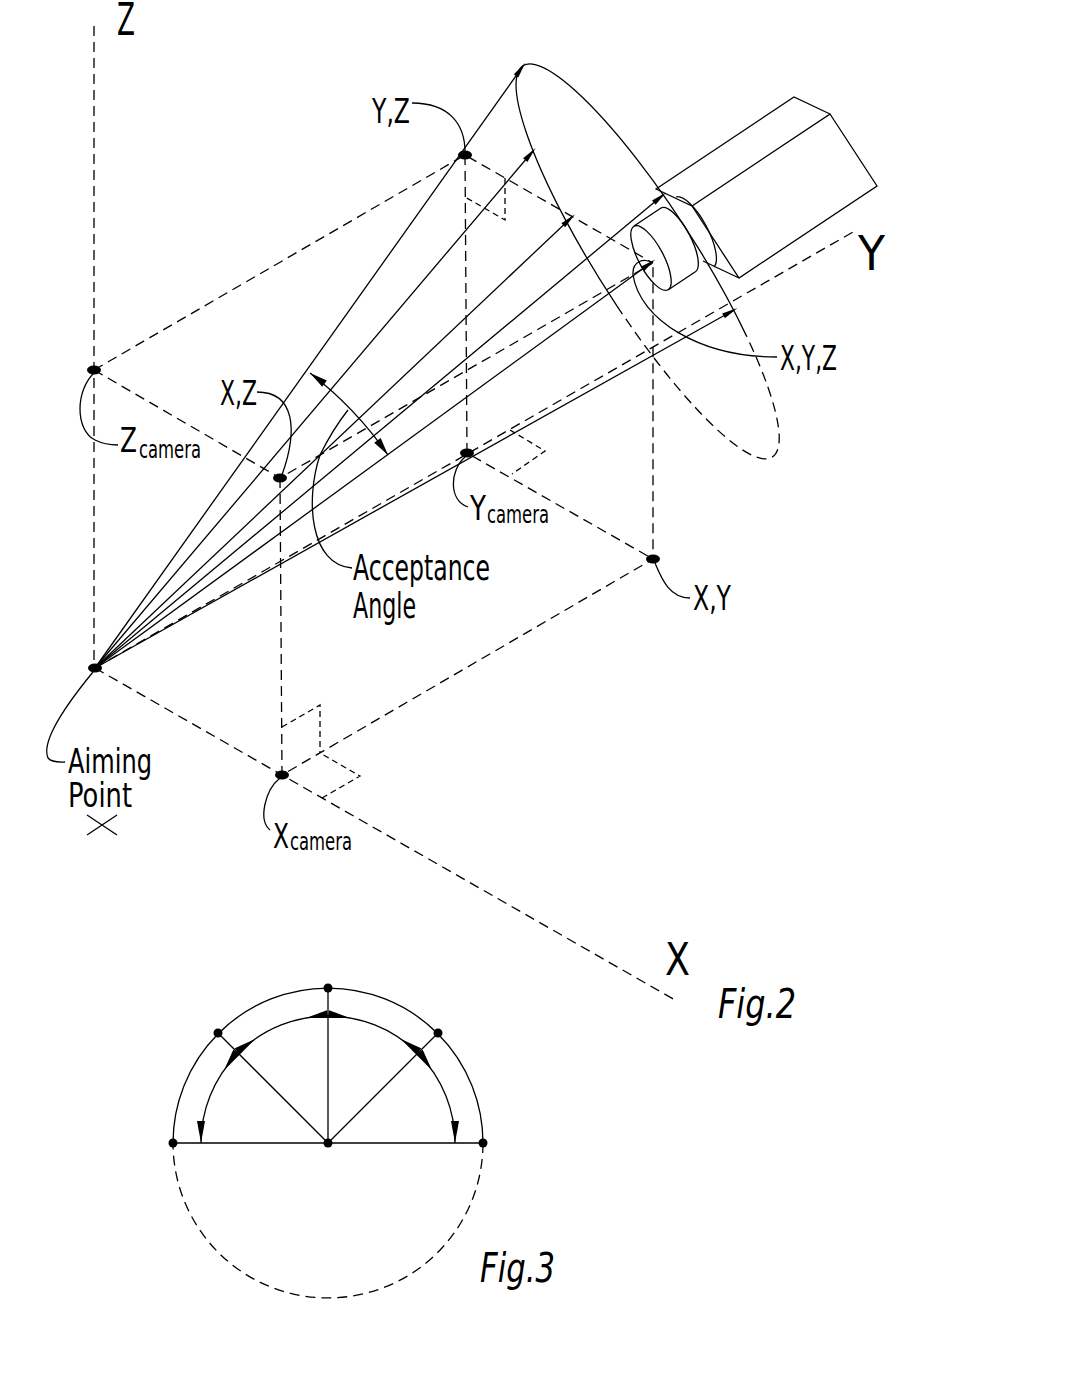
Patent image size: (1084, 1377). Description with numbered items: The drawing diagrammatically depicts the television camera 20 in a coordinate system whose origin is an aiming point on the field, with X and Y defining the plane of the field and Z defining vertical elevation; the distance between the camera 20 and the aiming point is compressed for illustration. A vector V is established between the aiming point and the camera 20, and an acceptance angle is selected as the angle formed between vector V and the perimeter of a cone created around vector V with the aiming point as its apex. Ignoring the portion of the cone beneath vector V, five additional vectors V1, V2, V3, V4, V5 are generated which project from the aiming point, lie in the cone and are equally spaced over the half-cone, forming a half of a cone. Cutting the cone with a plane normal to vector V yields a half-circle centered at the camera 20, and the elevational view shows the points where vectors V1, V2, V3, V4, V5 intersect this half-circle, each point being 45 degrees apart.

In FIG. 2, the television camera 20 is at (752, 143).
In FIG. 3, the 45° spacing 45 is at (278, 1020).
In FIG. 2, the vector V is at (623, 283).
In FIG. 3, the vector V is at (328, 1147).
In FIG. 2, the vector V1 is at (525, 258).
In FIG. 3, the vector V1 is at (172, 1143).
In FIG. 2, the vector V2 is at (443, 260).
In FIG. 3, the vector V2 is at (218, 1033).
In FIG. 2, the vector V3 is at (500, 102).
In FIG. 3, the vector V3 is at (328, 988).
In FIG. 2, the vector V4 is at (624, 222).
In FIG. 3, the vector V4 is at (438, 1033).
In FIG. 2, the vector V5 is at (566, 405).
In FIG. 3, the vector V5 is at (484, 1143).